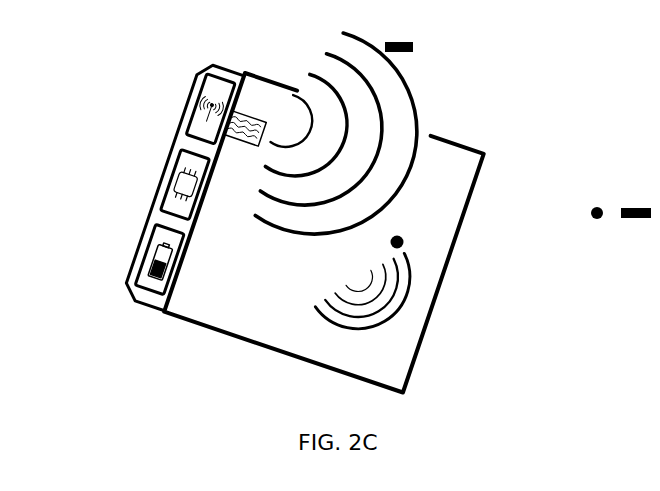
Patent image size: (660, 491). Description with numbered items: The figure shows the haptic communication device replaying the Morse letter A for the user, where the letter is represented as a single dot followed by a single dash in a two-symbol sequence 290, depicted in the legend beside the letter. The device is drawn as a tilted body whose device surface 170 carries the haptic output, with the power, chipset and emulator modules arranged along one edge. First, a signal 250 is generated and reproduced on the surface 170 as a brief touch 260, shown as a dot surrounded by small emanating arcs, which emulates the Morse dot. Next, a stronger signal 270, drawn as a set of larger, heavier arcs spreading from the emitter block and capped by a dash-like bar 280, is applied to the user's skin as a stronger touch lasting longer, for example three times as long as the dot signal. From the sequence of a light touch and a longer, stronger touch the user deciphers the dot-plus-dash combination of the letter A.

The device surface 170 is at (238, 303).
The signal 250 is at (415, 303).
The brief touch 260 is at (410, 239).
The stronger signal 270 is at (407, 80).
The signal emitter indicator bar 280 is at (415, 46).
The two-symbol sequence 290 is at (617, 228).